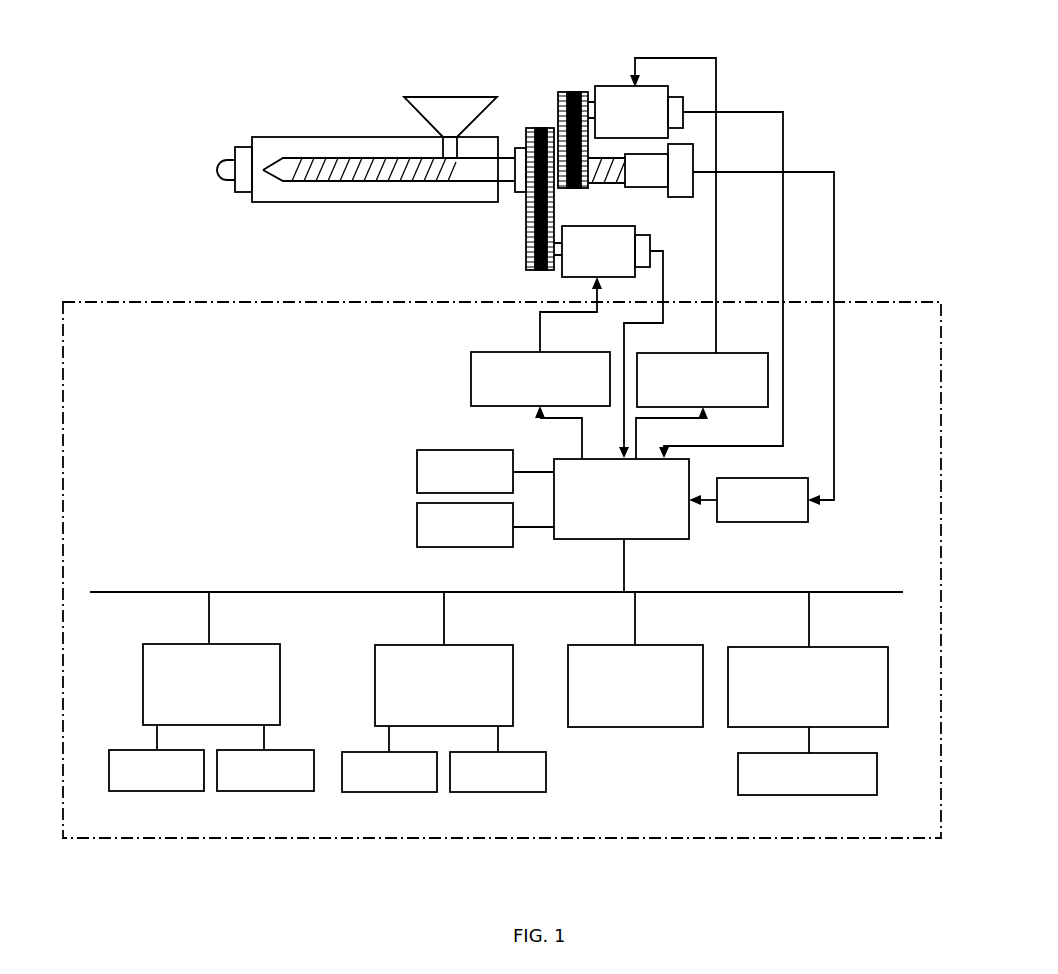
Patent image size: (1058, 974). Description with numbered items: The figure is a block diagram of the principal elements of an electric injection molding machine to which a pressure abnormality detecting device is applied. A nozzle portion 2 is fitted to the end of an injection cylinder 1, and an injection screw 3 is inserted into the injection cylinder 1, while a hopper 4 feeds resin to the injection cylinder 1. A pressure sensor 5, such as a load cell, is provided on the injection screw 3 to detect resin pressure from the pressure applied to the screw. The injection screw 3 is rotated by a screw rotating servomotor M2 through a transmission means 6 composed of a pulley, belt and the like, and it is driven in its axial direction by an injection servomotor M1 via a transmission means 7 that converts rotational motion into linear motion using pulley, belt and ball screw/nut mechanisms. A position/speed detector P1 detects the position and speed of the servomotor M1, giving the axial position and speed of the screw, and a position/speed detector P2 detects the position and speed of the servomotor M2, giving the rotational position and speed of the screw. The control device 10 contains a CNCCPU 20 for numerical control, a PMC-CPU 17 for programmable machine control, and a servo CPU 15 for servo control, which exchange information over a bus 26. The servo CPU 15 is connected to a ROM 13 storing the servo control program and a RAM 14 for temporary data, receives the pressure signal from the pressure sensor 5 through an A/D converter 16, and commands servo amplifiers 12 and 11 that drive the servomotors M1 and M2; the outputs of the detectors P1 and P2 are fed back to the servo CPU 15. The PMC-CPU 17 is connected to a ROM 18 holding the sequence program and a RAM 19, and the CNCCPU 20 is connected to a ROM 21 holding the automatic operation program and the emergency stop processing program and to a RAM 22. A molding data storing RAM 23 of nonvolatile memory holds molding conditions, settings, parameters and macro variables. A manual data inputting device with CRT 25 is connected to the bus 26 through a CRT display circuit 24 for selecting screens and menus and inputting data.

The injection cylinder 1 is at (292, 137).
The nozzle portion 2 is at (227, 175).
The injection screw 3 is at (335, 181).
The hopper 4 is at (440, 98).
The pressure sensor 5 is at (675, 197).
The transmission means 6 is at (514, 234).
The transmission means 7 is at (575, 80).
The injection servomotor M1 is at (620, 87).
The position/speed detector P1 is at (680, 97).
The screw rotating servomotor M2 is at (588, 226).
The position/speed detector P2 is at (664, 246).
The control device 10 is at (858, 300).
The servo amplifier 11 is at (488, 352).
The servo amplifier 12 is at (755, 340).
The ROM 13 is at (417, 460).
The RAM 14 is at (417, 518).
The servo CPU 15 is at (654, 539).
The A/D converter 16 is at (775, 522).
The PMC-CPU 17 is at (185, 644).
The ROM 18 is at (150, 791).
The RAM 19 is at (245, 791).
The CNCCPU 20 is at (421, 645).
The ROM 21 is at (392, 792).
The RAM 22 is at (463, 792).
The molding data storing RAM 23 is at (619, 645).
The CRT display circuit 24 is at (789, 647).
The manual data inputting device with CRT 25 is at (811, 795).
The bus 26 is at (830, 592).